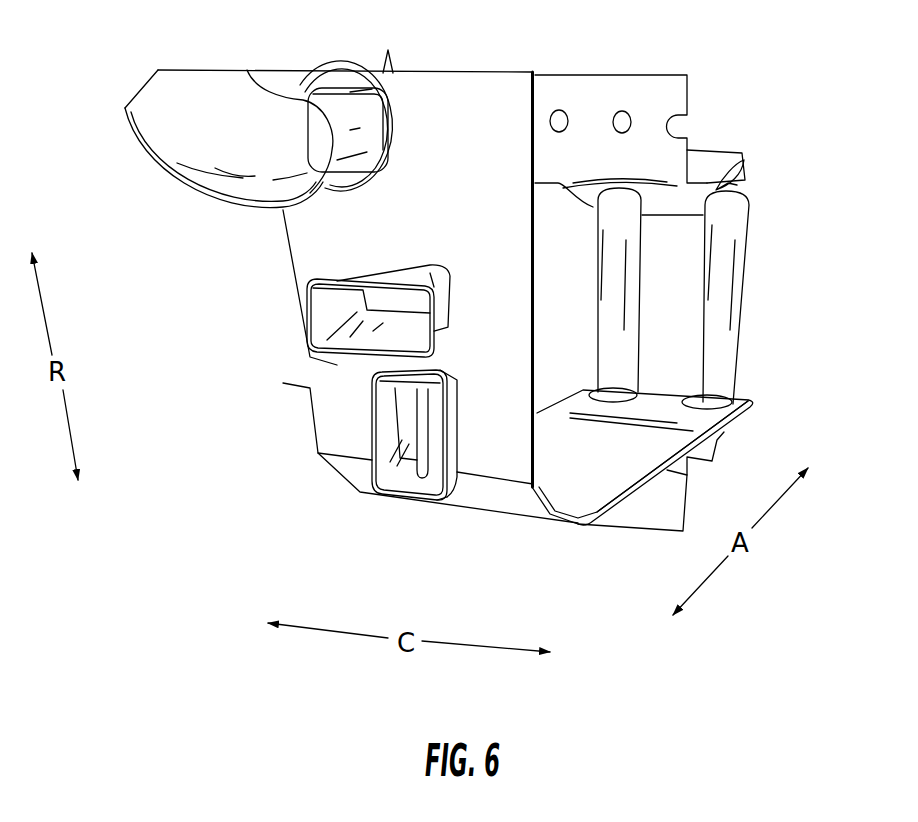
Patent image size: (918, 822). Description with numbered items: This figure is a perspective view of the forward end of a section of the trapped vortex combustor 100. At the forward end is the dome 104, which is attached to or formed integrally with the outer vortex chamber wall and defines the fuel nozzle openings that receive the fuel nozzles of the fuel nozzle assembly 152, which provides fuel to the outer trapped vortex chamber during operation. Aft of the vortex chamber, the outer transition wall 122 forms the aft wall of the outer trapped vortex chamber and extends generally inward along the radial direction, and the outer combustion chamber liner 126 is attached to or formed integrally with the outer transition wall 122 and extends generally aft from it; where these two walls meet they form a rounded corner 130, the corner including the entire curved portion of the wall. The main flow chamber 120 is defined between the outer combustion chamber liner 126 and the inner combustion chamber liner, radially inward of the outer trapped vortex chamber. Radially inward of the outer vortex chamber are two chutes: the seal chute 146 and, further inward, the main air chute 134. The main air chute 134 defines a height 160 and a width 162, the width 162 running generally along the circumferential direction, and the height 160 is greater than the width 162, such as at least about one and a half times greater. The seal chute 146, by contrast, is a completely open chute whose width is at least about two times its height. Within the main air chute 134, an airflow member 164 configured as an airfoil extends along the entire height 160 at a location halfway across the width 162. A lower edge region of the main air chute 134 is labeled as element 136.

The trapped vortex combustor 100 is at (758, 105).
The dome 104 is at (533, 112).
The main flow chamber 120 is at (637, 493).
The outer transition wall 122 is at (690, 98).
The outer combustion chamber liner 126 is at (745, 171).
The corner 130 is at (672, 196).
The main air chute 134 is at (388, 470).
The duct edge 136 is at (443, 506).
The seal chute 146 is at (330, 319).
The fuel nozzle assembly 152 is at (202, 243).
The height 160 is at (455, 270).
The width 162 is at (362, 242).
The airflow member 164 is at (417, 418).